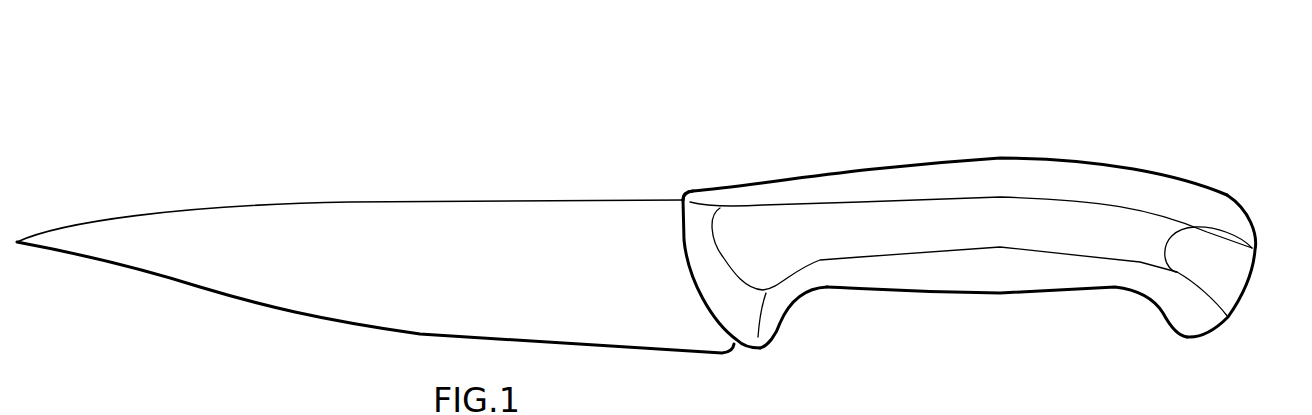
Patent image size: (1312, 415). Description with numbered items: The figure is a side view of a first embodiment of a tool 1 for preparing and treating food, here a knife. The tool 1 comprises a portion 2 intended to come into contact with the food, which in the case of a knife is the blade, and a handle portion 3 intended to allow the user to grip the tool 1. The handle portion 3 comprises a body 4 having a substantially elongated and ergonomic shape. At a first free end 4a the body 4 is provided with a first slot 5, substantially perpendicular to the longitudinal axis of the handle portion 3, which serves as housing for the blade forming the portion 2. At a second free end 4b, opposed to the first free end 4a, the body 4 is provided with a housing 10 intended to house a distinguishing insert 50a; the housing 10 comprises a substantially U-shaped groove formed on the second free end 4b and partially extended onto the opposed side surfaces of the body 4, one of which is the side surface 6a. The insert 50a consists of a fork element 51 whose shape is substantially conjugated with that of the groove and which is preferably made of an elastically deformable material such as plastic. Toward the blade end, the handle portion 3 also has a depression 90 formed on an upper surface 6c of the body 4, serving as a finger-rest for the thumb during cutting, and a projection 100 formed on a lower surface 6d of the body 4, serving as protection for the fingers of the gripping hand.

The tool 1 is at (519, 134).
The portion intended to come into contact with the food 2 is at (270, 225).
The handle portion 3 is at (1015, 153).
The body 4 is at (887, 167).
The first free end 4a is at (683, 190).
The second free end 4b is at (1235, 186).
The first slot 5 is at (738, 345).
The side surface 6a is at (955, 173).
The upper surface 6c is at (1109, 160).
The lower surface 6d is at (1060, 300).
The housing 10 is at (1229, 322).
The distinguishing insert 50a is at (1263, 303).
The fork element 51 is at (1238, 270).
The depression 90 is at (745, 185).
The projection 100 is at (790, 305).